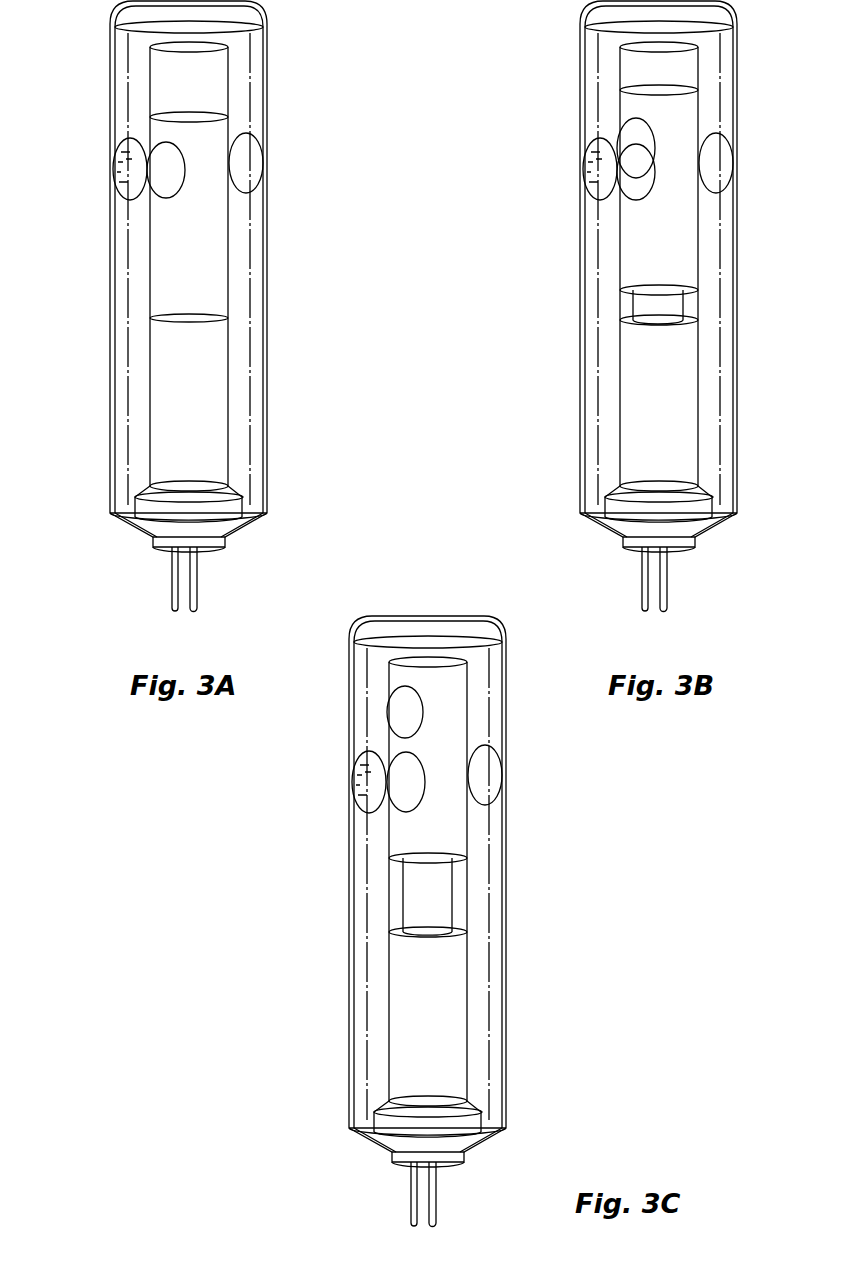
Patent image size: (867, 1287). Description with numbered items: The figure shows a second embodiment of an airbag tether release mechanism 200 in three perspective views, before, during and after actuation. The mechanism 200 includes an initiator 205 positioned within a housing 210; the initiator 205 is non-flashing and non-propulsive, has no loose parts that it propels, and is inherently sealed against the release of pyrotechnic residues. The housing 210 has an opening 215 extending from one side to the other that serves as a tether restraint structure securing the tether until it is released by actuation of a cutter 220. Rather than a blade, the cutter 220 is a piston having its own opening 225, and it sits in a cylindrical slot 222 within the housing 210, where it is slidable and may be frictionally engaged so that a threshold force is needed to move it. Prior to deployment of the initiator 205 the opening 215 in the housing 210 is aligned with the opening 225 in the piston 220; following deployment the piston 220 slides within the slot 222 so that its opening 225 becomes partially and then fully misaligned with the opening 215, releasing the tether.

In FIG. 3A, the tether release mechanism 200 is at (72, 130).
In FIG. 3B, the tether release mechanism 200 is at (540, 133).
In FIG. 3C, the tether release mechanism 200 is at (284, 927).
In FIG. 3A, the initiator 205 is at (223, 543).
In FIG. 3B, the initiator 205 is at (693, 543).
In FIG. 3C, the initiator 205 is at (463, 1157).
In FIG. 3A, the housing 210 is at (256, 88).
In FIG. 3B, the housing 210 is at (726, 88).
In FIG. 3C, the housing 210 is at (477, 632).
In FIG. 3A, the opening 215 is at (134, 168).
In FIG. 3B, the opening 215 is at (603, 169).
In FIG. 3C, the opening 215 is at (364, 784).
In FIG. 3A, the cutter 220 is at (216, 233).
In FIG. 3B, the cutter 220 is at (686, 233).
In FIG. 3C, the cutter 220 is at (443, 836).
In FIG. 3A, the cylindrical slot 222 is at (197, 79).
In FIG. 3B, the cylindrical slot 222 is at (666, 79).
In FIG. 3C, the cylindrical slot 222 is at (453, 897).
In FIG. 3A, the opening 225 is at (169, 161).
In FIG. 3B, the opening 225 is at (640, 134).
In FIG. 3C, the opening 225 is at (398, 711).